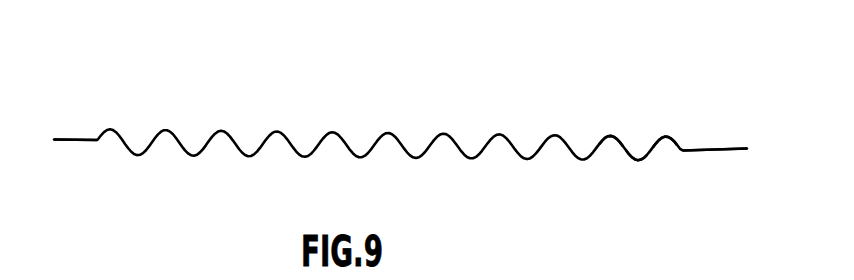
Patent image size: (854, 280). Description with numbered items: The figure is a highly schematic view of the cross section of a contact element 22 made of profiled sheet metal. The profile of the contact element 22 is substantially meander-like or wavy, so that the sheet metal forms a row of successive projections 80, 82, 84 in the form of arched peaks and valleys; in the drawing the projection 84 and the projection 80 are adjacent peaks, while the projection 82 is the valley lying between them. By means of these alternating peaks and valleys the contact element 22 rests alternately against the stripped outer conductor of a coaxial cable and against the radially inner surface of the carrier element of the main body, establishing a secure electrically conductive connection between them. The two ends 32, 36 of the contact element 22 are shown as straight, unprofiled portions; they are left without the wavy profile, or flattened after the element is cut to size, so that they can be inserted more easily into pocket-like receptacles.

The contact element 22 is at (379, 111).
The end of contact element 36 is at (72, 139).
The projection 84 is at (612, 136).
The projection 82 is at (635, 160).
The projection 80 is at (667, 135).
The end of contact element 32 is at (736, 147).